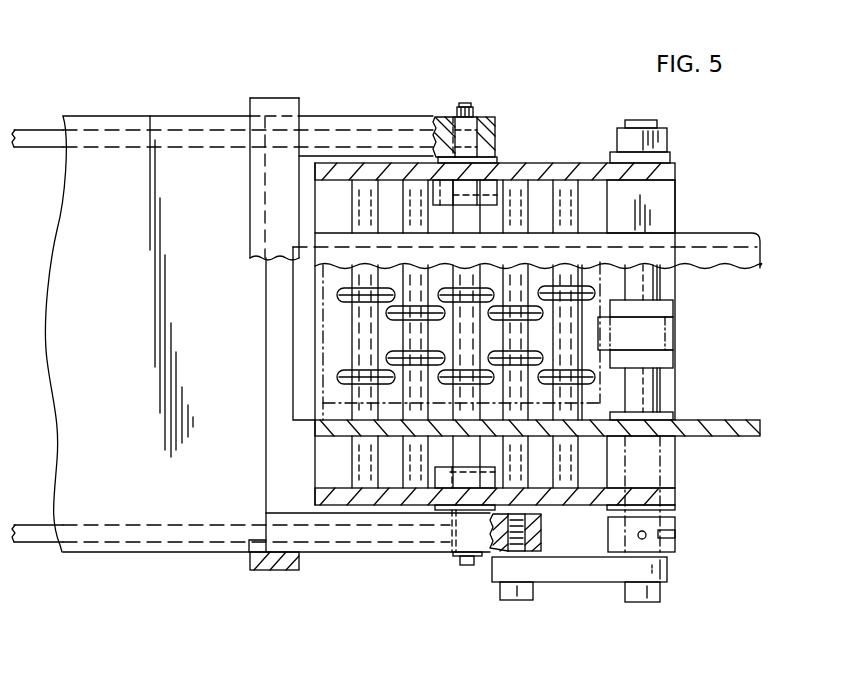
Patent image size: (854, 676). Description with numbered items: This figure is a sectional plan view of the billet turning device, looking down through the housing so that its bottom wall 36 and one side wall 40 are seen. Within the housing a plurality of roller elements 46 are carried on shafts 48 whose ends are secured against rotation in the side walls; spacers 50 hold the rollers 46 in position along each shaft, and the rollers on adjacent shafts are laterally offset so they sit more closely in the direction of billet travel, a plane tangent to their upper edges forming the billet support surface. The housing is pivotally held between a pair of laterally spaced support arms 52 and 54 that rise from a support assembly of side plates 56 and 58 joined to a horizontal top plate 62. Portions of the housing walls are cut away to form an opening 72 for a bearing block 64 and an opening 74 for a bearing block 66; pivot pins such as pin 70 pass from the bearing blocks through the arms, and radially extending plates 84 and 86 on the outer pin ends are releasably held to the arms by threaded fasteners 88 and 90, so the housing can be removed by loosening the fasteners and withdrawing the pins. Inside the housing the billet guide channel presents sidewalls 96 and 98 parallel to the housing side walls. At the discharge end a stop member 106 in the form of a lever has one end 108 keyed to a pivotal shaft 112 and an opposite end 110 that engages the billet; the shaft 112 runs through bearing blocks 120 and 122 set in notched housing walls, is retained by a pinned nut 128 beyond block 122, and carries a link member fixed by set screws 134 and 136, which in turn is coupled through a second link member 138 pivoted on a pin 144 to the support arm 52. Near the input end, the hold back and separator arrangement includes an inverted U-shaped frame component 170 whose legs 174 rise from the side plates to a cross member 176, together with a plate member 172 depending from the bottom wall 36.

The bottom wall 36 is at (672, 498).
The side wall 40 is at (588, 162).
The roller elements 46 is at (348, 298).
The shafts 48 is at (368, 505).
The spacers 50 is at (527, 198).
The support arm 52 is at (425, 545).
The support arm 54 is at (423, 120).
The side plate 56 is at (38, 536).
The side plate 58 is at (37, 135).
The top plate 62 is at (117, 163).
The bearing block 64 is at (438, 478).
The bearing block 66 is at (440, 187).
The pivot pin 70 is at (477, 137).
The opening 72 is at (447, 467).
The opening 74 is at (487, 200).
The plate 84 is at (457, 553).
The plate 86 is at (475, 113).
The threaded fastener 88 is at (467, 566).
The threaded fastener 90 is at (470, 105).
The sidewall 96 is at (717, 437).
The sidewall 98 is at (705, 231).
The stop member 106 is at (680, 335).
The end 108 is at (668, 310).
The end 110 is at (640, 343).
The pivotal shaft 112 is at (653, 282).
The bearing block 120 is at (668, 465).
The bearing block 122 is at (667, 202).
The nut 128 is at (660, 138).
The set screw 134 is at (635, 538).
The set screw 136 is at (675, 533).
The second link member 138 is at (553, 581).
The pin 144 is at (511, 601).
The frame component 170 is at (259, 95).
The plate member 172 is at (288, 308).
The legs 174 is at (285, 97).
The cross member 176 is at (252, 218).